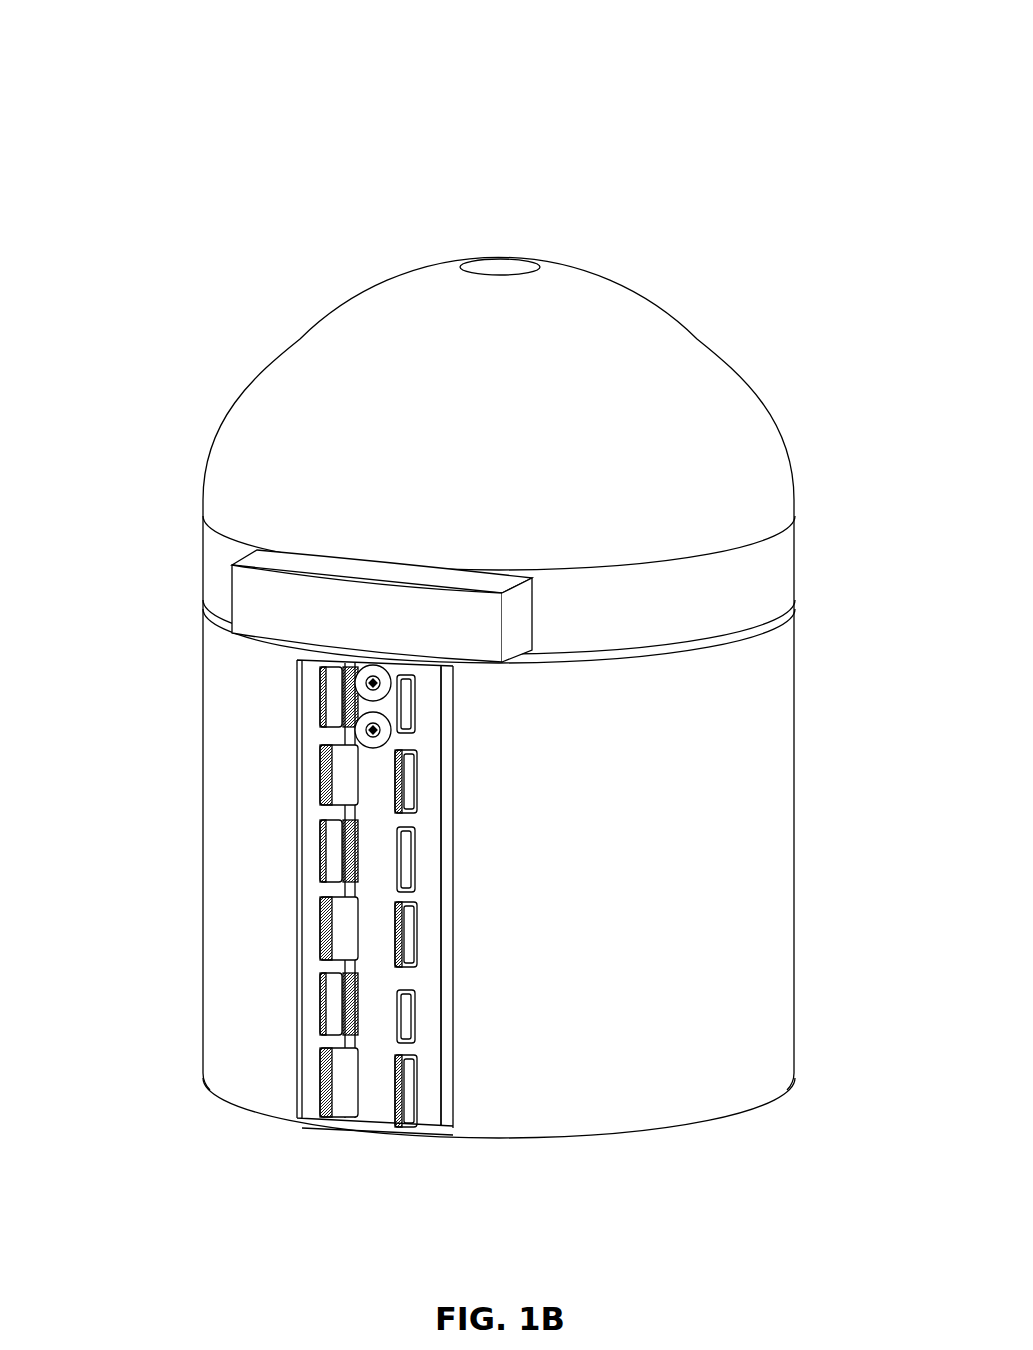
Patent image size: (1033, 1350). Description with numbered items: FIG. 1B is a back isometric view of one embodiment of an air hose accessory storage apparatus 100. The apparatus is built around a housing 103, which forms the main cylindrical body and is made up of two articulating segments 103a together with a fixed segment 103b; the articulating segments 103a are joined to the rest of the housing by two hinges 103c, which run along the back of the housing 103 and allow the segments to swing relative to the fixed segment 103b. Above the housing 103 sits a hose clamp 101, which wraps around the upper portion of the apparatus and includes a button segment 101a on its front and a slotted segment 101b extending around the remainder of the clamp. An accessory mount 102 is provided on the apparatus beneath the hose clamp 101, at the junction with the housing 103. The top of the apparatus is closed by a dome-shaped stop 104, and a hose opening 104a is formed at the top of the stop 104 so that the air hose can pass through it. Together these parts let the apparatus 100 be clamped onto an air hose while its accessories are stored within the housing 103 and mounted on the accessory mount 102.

The air hose accessory storage apparatus 100 is at (120, 74).
The hose clamp 101 is at (554, 634).
The button segment 101a is at (385, 631).
The slotted segment 101b is at (683, 609).
The accessory mount 102 is at (662, 653).
The housing 103 is at (346, 928).
The articulating segments 103a is at (282, 903).
The fixed segment 103b is at (372, 1075).
The hinges 103c is at (453, 975).
The stop 104 is at (517, 489).
The hose opening 104a is at (507, 277).